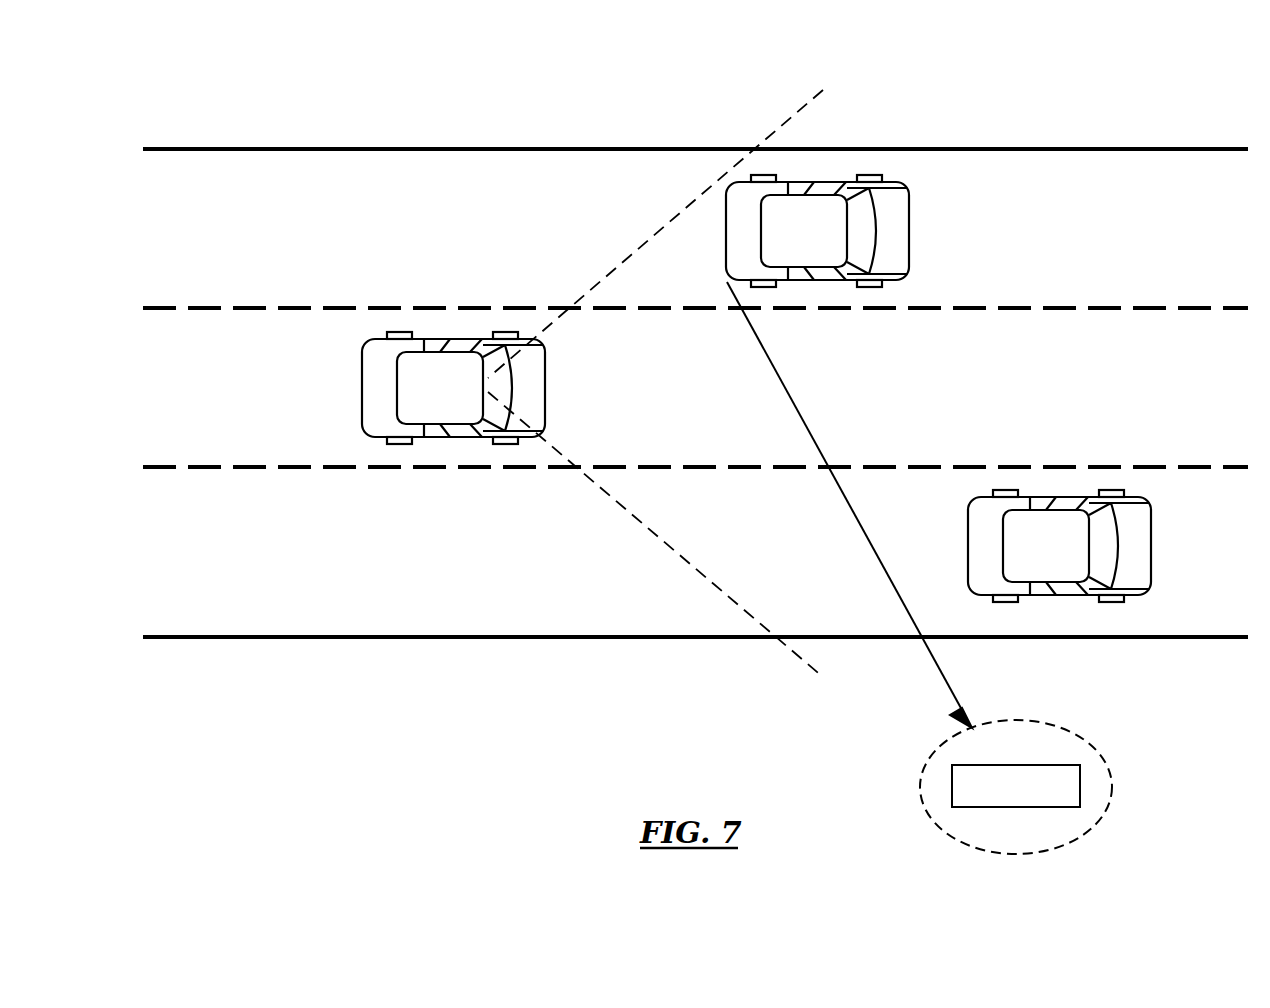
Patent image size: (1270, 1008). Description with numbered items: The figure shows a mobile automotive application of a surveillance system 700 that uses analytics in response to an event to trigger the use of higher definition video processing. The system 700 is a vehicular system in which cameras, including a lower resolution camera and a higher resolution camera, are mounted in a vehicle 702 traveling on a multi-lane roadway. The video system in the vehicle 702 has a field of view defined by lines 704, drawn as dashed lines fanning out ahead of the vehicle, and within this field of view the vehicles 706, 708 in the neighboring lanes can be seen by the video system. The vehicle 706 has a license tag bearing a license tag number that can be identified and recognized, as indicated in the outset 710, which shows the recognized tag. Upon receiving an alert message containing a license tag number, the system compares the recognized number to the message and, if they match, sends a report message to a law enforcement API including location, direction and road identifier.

The surveillance system 700 is at (326, 86).
The vehicle 702 is at (362, 396).
The lines 704 is at (617, 262).
The vehicle 706 is at (912, 248).
The vehicle 708 is at (1153, 565).
The outset 710 is at (1105, 760).